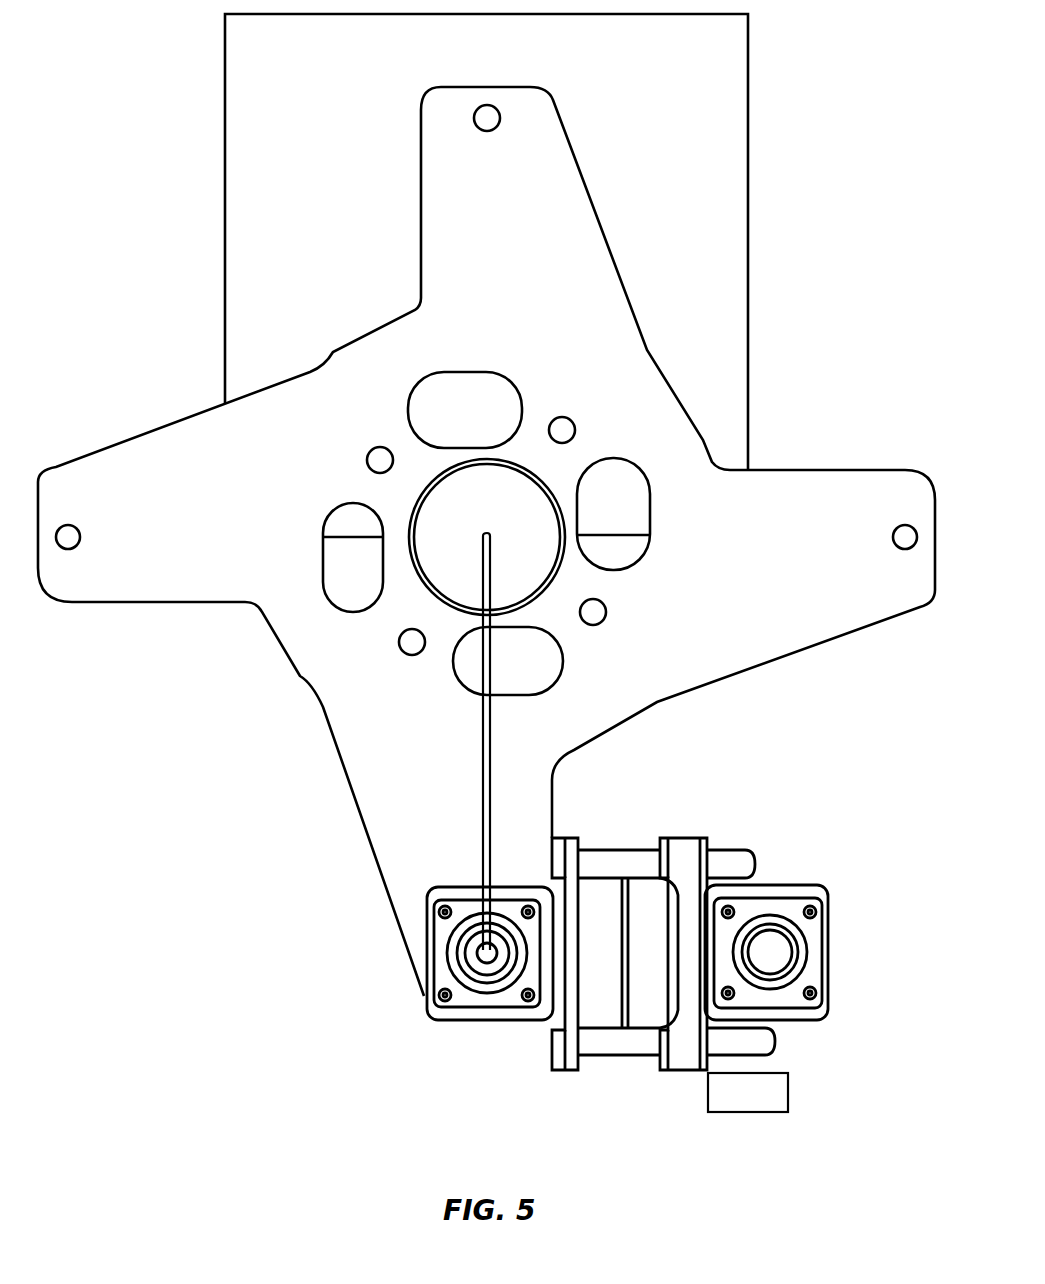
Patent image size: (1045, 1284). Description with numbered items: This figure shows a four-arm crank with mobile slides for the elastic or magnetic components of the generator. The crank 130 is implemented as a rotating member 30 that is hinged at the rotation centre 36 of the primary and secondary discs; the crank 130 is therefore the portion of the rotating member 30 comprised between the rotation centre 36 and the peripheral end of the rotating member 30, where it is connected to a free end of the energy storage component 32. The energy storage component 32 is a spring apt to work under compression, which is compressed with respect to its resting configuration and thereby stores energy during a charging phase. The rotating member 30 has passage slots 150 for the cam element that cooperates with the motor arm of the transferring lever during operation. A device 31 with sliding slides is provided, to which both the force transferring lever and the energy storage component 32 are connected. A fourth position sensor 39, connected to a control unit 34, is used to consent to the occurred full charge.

The rotating member 30 is at (292, 675).
The device with sliding slides 31 is at (525, 1023).
The energy storage component 32 is at (608, 1026).
The control unit 34 is at (748, 138).
The rotation centre 36 is at (491, 527).
The fourth position sensor 39 is at (785, 1095).
The crank 130 is at (483, 757).
The passage slots 150 is at (433, 422).